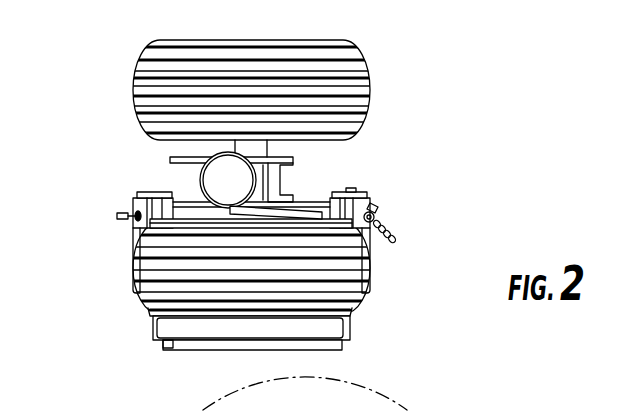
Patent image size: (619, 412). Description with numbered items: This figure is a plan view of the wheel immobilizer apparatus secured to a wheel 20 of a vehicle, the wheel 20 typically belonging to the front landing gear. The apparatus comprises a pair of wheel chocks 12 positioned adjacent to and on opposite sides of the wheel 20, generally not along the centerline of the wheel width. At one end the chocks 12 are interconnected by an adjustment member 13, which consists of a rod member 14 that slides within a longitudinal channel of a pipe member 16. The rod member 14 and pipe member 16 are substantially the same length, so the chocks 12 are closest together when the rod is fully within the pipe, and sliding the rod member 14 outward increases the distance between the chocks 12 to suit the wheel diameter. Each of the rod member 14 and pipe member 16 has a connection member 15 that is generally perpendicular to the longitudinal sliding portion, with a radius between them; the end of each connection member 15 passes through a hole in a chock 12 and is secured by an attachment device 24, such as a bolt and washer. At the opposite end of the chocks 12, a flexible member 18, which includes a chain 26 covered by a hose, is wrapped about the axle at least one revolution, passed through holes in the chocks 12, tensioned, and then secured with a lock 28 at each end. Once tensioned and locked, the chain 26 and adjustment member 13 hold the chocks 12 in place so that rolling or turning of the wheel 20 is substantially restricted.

The wheel chock 12 is at (133, 196).
The adjustment member 13 is at (326, 353).
The rod member 14 is at (165, 342).
The connection member 15 is at (153, 320).
The pipe member 16 is at (232, 350).
The flexible member 18 is at (300, 209).
The wheel 20 is at (137, 68).
The attachment device 24 is at (351, 190).
The chain 26 is at (398, 236).
The lock 28 is at (118, 216).